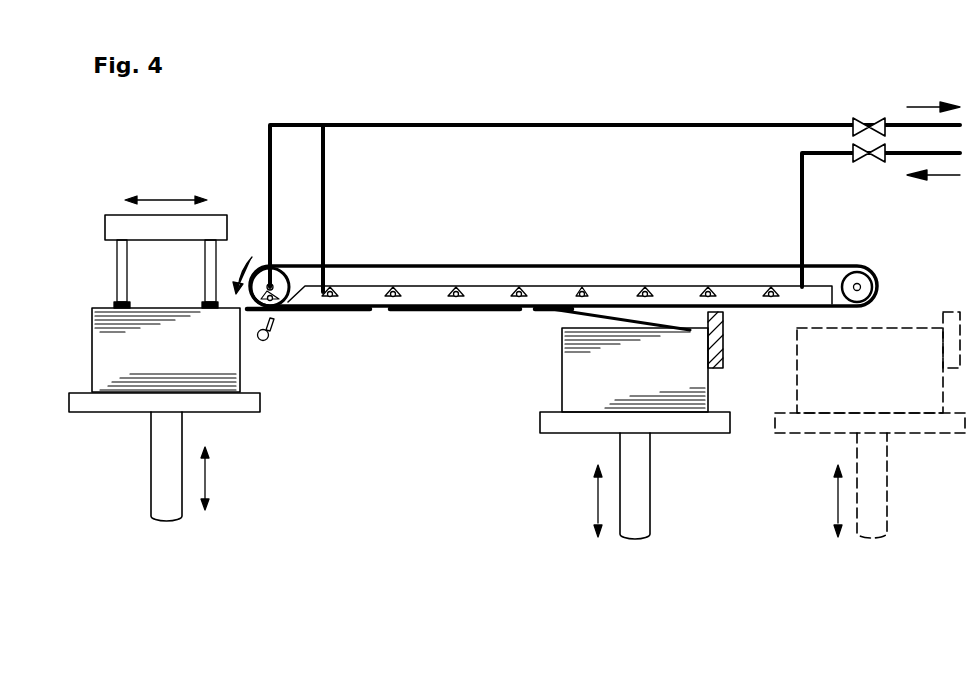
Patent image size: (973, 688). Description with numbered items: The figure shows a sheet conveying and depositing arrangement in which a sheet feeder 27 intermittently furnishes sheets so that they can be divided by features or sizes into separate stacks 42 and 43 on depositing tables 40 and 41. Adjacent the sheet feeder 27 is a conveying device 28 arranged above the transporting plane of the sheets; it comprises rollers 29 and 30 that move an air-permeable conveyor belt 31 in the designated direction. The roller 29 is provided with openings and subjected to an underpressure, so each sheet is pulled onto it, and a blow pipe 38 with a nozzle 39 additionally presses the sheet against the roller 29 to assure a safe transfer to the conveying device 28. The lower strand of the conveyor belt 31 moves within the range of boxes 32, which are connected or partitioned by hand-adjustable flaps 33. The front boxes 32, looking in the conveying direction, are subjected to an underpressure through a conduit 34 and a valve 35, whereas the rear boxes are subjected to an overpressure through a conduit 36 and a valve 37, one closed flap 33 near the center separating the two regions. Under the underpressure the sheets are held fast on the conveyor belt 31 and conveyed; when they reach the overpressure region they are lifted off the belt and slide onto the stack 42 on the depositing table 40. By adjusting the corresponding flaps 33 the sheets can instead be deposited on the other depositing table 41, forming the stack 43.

The sheet feeder 27 is at (122, 232).
The conveying device 28 is at (385, 402).
The roller 29 is at (272, 267).
The roller 30 is at (864, 280).
The conveyor belt 31 is at (655, 266).
The boxes 32 is at (548, 290).
The flaps 33 is at (452, 288).
The conduit 34 is at (650, 125).
The valve 35 is at (869, 118).
The conduit 36 is at (801, 173).
The valve 37 is at (870, 162).
The blow pipe 38 is at (266, 341).
The nozzle 39 is at (275, 326).
The depositing table 40 is at (570, 425).
The depositing table 41 is at (807, 425).
The stack 42 is at (686, 400).
The stack 43 is at (916, 400).